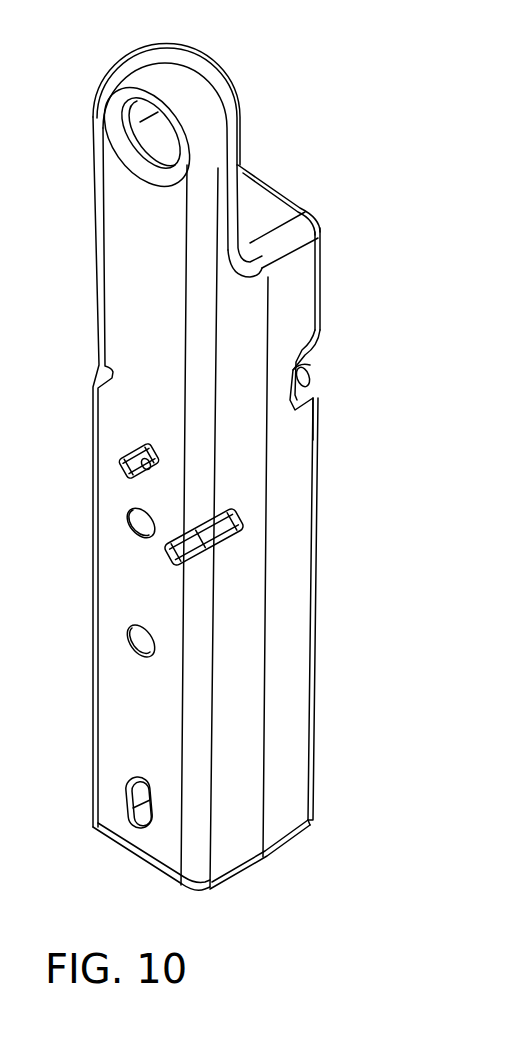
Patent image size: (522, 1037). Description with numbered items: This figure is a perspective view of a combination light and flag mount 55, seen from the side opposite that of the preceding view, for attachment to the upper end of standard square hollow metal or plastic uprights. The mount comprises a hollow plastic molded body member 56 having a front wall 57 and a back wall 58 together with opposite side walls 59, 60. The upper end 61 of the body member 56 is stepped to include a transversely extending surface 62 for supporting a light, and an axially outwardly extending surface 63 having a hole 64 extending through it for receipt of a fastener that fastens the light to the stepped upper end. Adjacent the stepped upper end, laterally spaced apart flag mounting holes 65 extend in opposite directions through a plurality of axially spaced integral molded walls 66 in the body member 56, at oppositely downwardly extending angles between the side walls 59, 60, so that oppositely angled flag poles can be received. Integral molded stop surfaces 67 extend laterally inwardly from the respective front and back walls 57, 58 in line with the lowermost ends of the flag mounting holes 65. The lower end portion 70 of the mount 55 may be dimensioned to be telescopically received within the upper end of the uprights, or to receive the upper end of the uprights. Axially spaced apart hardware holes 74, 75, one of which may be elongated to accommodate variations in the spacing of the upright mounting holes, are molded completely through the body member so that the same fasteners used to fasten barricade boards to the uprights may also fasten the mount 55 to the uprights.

The combination light and flag mount 55 is at (345, 297).
The body member 56 is at (260, 508).
The front wall 57 is at (127, 567).
The back wall 58 is at (315, 593).
The side wall 59 is at (92, 535).
The side wall 60 is at (287, 667).
The upper end 61 is at (298, 265).
The transversely extending surface 62 is at (267, 203).
The axially outwardly extending surface 63 is at (240, 138).
The hole 64 is at (157, 130).
The flag mounting holes 65 is at (310, 380).
The integral molded walls 66 is at (308, 358).
The stop surfaces 67 is at (200, 562).
The lower end portion 70 is at (280, 772).
The hardware hole 74 is at (130, 637).
The hardware hole 75 is at (128, 797).